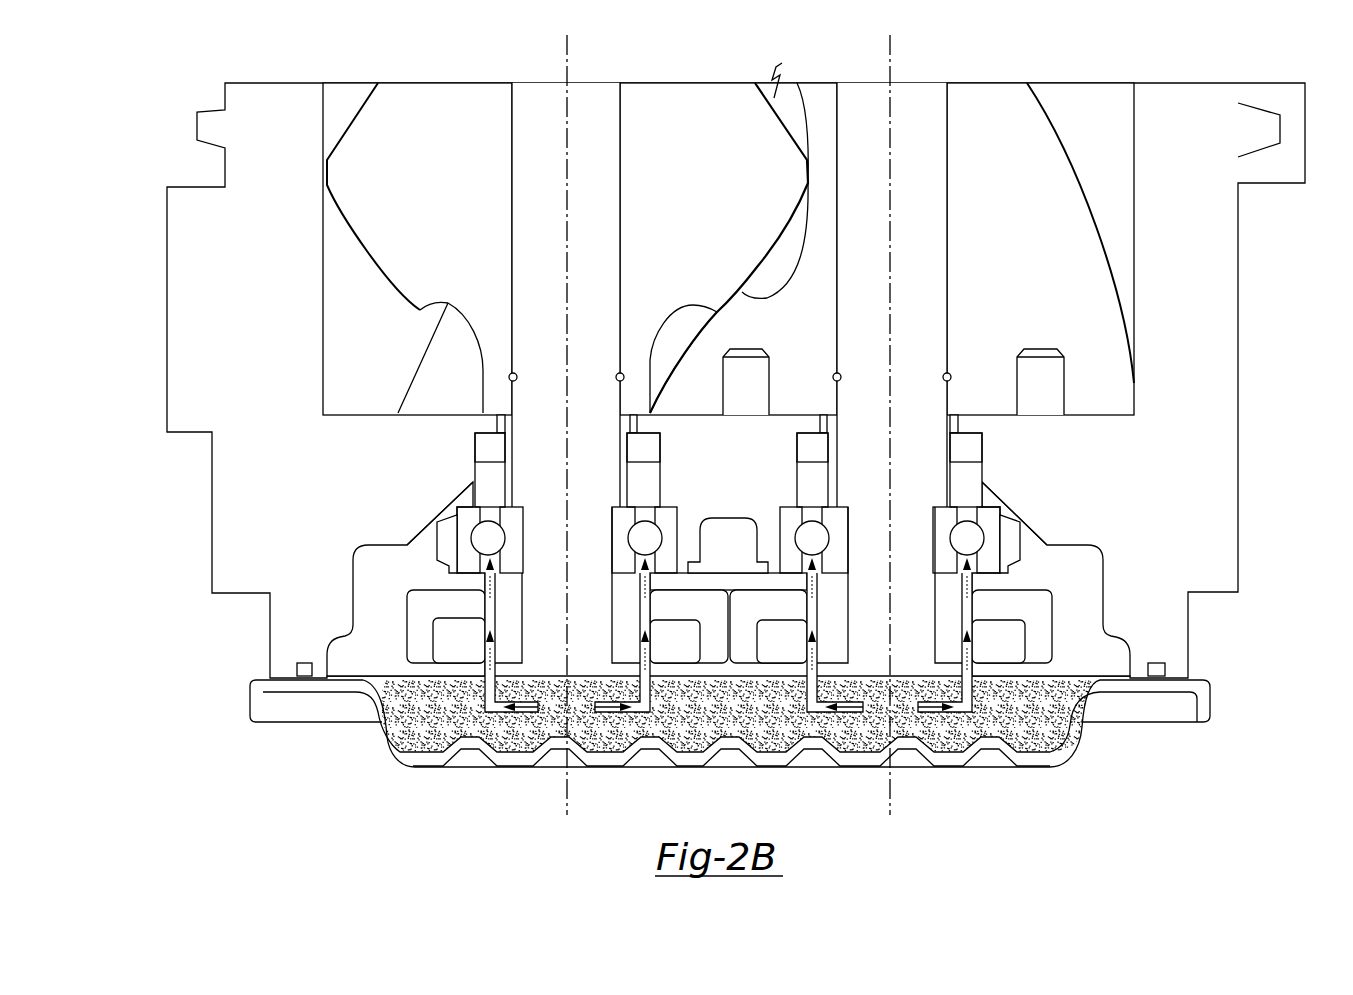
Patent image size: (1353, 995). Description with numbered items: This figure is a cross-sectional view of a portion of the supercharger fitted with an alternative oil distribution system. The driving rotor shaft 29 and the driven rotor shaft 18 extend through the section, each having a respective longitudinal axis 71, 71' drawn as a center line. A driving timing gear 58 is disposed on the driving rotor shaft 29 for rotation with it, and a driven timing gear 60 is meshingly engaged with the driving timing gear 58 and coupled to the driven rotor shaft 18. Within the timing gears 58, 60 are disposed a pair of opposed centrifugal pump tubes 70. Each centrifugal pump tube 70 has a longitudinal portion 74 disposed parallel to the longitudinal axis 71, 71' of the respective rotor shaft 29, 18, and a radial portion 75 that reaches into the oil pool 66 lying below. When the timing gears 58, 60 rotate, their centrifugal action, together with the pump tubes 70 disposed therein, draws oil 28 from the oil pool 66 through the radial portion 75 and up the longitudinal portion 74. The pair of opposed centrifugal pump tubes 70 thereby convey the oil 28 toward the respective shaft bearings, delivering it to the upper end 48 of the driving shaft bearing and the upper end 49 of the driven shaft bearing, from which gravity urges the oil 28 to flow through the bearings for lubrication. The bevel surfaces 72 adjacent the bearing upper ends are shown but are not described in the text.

The driven rotor shaft 18 is at (862, 90).
The driving rotor shaft 29 is at (540, 90).
The longitudinal axis 71 is at (601, 423).
The longitudinal axis 71' is at (927, 423).
The chamfer surface 72 is at (455, 495).
The upper end of the driving shaft bearing 48 is at (455, 523).
The upper end of the driven shaft bearing 49 is at (1002, 523).
The longitudinal portion 74 is at (486, 626).
The radial portion 75 is at (503, 703).
The driving timing gear 58 is at (407, 645).
The driven timing gear 60 is at (1052, 645).
The centrifugal pump tubes 70 is at (498, 705).
The oil pool 66 is at (683, 737).
The oil 28 is at (777, 745).